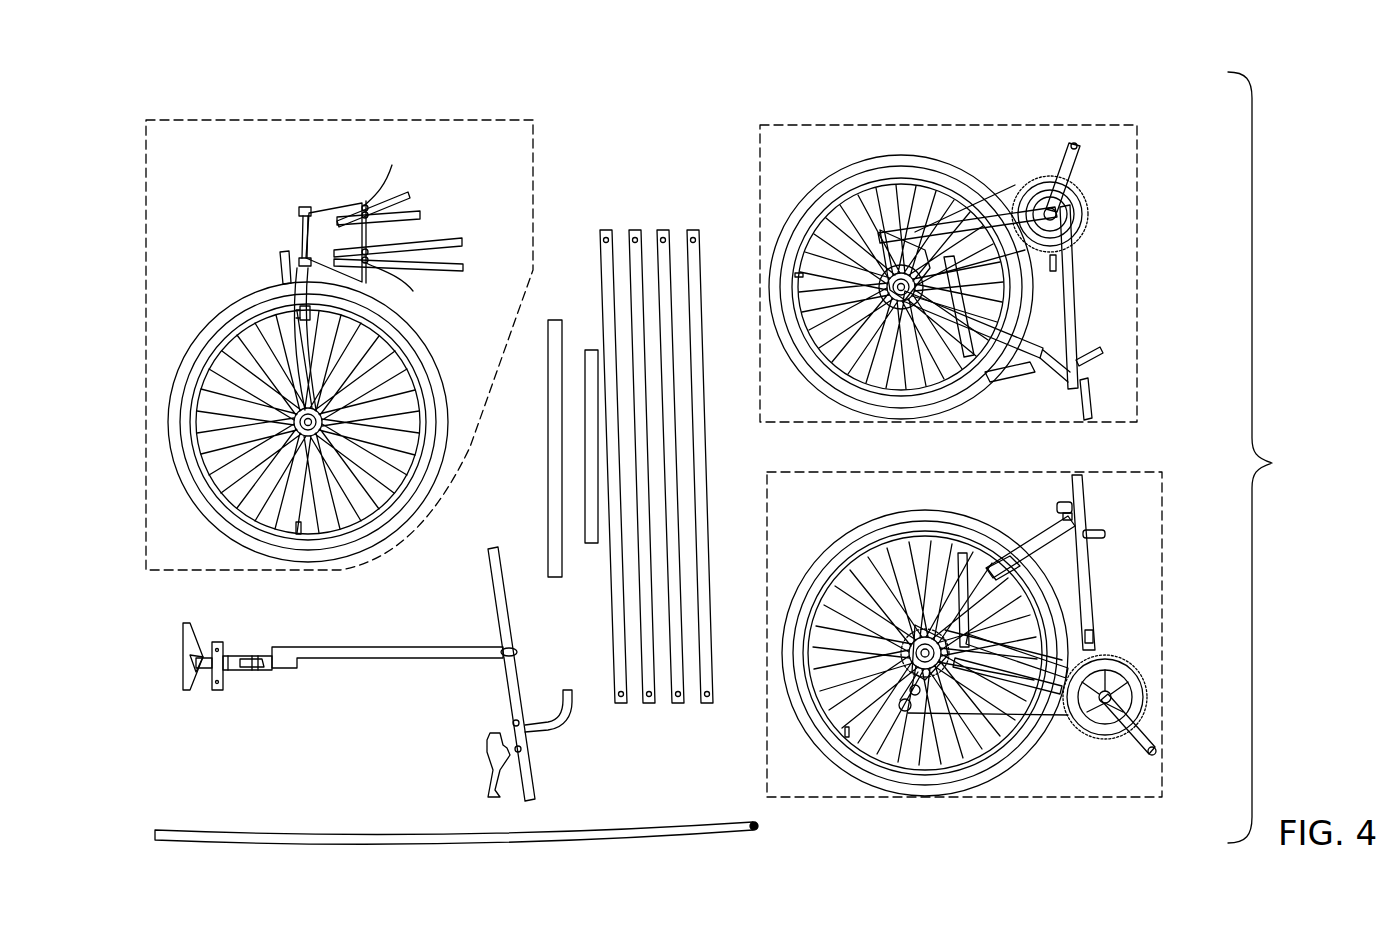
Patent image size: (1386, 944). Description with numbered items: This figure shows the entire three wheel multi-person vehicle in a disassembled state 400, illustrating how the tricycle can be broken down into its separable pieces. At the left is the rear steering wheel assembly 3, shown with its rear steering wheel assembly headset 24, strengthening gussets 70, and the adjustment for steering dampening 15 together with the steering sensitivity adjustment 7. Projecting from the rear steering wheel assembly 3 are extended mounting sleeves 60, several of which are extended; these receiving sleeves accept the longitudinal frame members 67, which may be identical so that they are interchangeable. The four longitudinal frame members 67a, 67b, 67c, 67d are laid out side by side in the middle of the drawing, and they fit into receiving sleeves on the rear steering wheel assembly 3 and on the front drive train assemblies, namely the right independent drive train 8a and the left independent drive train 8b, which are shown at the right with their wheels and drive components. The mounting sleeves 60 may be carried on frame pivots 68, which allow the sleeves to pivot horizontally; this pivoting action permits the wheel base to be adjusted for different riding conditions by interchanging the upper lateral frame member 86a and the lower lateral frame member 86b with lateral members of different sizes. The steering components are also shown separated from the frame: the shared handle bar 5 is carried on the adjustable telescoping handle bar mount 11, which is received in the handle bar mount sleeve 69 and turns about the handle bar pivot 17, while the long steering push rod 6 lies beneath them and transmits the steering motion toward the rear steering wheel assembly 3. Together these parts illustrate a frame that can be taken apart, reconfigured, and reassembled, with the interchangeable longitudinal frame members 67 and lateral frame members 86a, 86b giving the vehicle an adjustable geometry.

The rear steering wheel assembly 3 is at (146, 358).
The rear steering wheel assembly headset 24 is at (301, 226).
The strengthening gussets 70 is at (345, 240).
The frame pivots 68 is at (1077, 518).
The adjustment for steering dampening 15 is at (283, 257).
The steering sensitivity adjustment 7 is at (188, 625).
The extended mounting sleeves 60 is at (472, 266).
The longitudinal frame members 67 is at (731, 710).
The longitudinal frame member 67a is at (606, 228).
The longitudinal frame member 67b is at (635, 228).
The longitudinal frame member 67c is at (663, 228).
The longitudinal frame member 67d is at (693, 228).
The upper lateral frame member 86a is at (548, 480).
The lower lateral frame member 86b is at (592, 548).
The shared handle bar 5 is at (495, 585).
The adjustable telescoping handle bar mount 11 is at (356, 672).
The handle bar mount sleeve 69 is at (213, 688).
The handle bar pivot 17 is at (250, 676).
The steering push rod 6 is at (354, 832).
The right independent drive train 8a is at (1138, 262).
The left independent drive train 8b is at (1163, 578).
The disassembled state 400 is at (1276, 457).